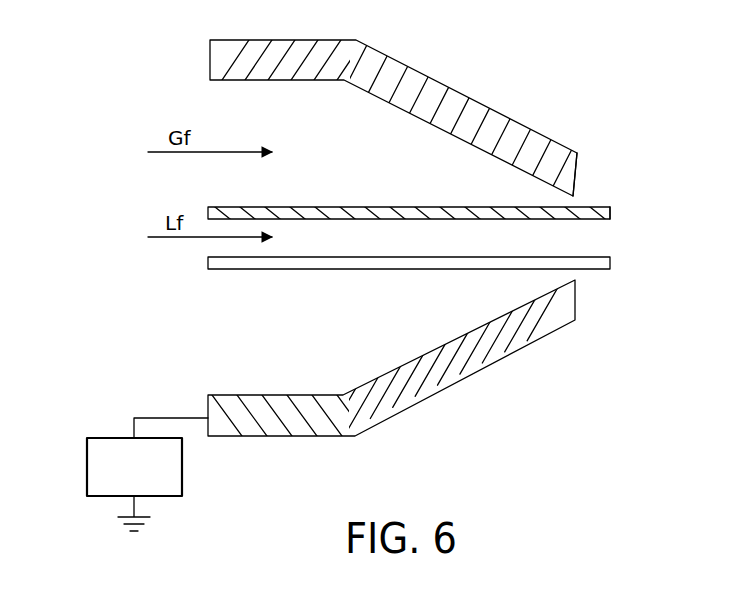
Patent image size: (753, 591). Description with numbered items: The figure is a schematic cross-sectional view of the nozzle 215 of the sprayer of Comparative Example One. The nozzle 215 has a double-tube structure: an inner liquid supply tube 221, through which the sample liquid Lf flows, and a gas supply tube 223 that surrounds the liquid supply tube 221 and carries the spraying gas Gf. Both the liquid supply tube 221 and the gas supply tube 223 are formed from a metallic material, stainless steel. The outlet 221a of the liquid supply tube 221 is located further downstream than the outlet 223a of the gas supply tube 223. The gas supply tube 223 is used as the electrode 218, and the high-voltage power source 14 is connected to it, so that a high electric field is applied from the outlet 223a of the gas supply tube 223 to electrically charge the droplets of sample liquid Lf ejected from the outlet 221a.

The nozzle 215 is at (130, 40).
The electrode 218 is at (575, 121).
The gas supply tube 223 is at (208, 60).
The outlet of the gas supply tube 223a is at (584, 178).
The liquid supply tube 221 is at (208, 213).
The outlet of the liquid supply tube 221a is at (613, 210).
The high-voltage power source 14 is at (87, 466).